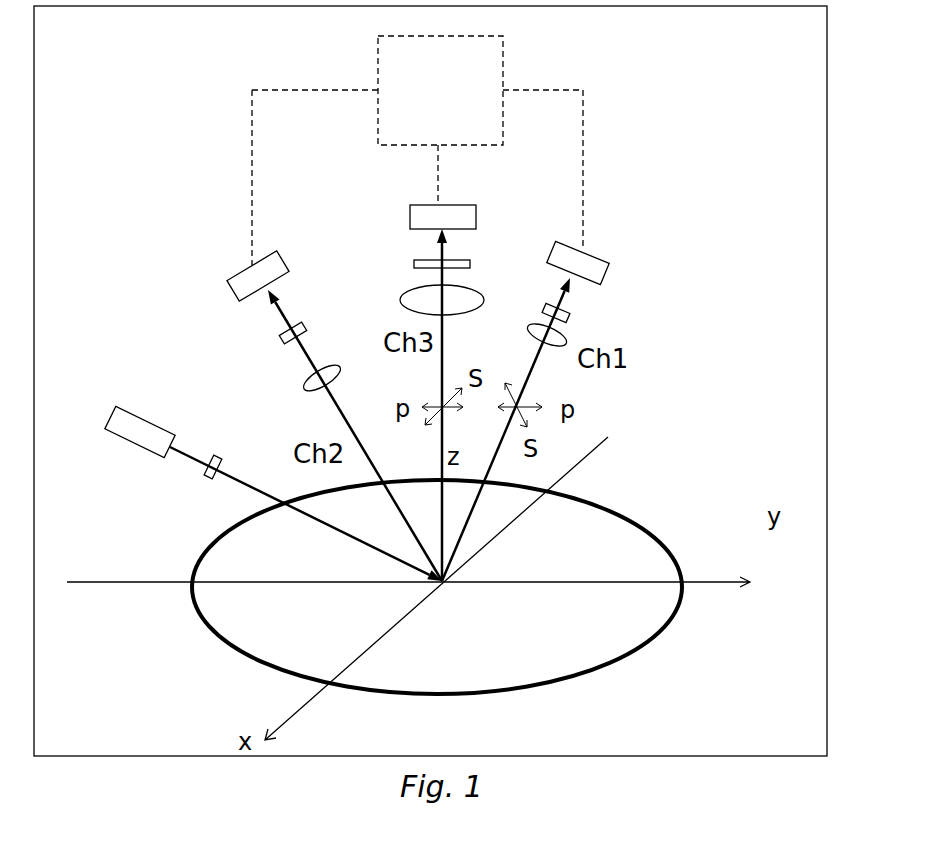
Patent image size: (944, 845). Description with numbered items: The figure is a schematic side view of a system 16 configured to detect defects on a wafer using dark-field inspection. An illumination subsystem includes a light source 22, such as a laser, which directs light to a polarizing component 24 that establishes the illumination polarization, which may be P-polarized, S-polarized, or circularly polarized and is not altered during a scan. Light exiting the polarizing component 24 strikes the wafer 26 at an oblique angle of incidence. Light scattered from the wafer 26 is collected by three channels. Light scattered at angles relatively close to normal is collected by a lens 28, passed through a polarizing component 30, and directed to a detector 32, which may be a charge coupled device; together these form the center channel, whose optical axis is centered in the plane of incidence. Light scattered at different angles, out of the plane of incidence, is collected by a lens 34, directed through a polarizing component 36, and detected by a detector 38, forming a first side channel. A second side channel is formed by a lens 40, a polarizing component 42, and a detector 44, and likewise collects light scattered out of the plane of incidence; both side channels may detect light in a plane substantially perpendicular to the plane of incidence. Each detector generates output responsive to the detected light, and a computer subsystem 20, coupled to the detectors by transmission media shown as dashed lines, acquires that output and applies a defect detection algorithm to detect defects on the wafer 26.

The system 16 is at (827, 205).
The computer subsystem 20 is at (440, 90).
The light source 22 is at (112, 418).
The polarizing component 24 is at (222, 455).
The wafer 26 is at (212, 543).
The lens 28 is at (400, 300).
The polarizing component 30 is at (414, 262).
The detector 32 is at (410, 213).
The lens 34 is at (525, 336).
The polarizing component 36 is at (562, 319).
The detector 38 is at (600, 278).
The lens 40 is at (305, 392).
The polarizing component 42 is at (278, 341).
The detector 44 is at (233, 297).